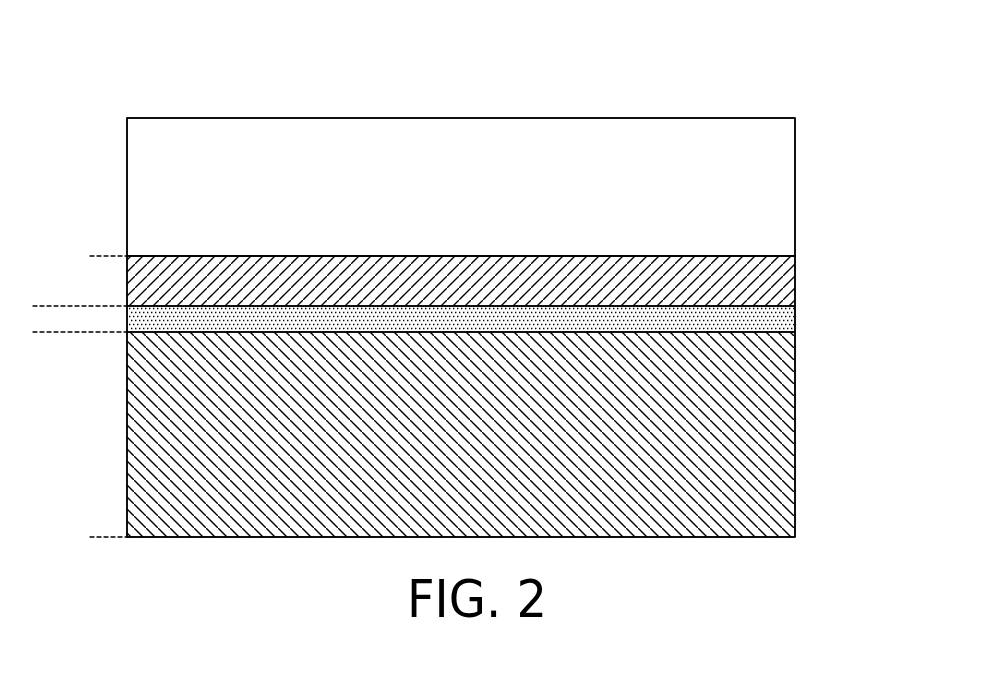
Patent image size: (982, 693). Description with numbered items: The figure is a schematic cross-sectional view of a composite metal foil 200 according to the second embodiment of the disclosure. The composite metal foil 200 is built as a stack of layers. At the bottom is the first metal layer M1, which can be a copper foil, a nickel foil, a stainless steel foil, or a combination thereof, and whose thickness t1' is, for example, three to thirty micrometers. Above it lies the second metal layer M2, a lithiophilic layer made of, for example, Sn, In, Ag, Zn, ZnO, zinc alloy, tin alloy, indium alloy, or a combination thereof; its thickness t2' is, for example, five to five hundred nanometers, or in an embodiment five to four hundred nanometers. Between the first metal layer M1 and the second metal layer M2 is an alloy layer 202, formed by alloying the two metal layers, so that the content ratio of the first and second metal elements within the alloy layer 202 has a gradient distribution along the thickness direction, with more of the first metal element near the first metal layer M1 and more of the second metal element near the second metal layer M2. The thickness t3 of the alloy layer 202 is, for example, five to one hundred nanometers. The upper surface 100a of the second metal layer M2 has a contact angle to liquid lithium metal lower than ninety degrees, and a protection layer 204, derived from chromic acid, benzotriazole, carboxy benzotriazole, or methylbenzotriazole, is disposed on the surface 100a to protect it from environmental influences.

The composite metal foil 200 is at (177, 80).
The protection layer 204 is at (797, 191).
The second metal layer M2 is at (797, 282).
The alloy layer 202 is at (797, 321).
The first metal layer M1 is at (797, 425).
The surface of the second metal layer 100a is at (174, 253).
The thickness of the first metal layer t1' is at (98, 434).
The thickness of the second metal layer t2' is at (80, 281).
The thickness of the alloy layer t3 is at (42, 278).